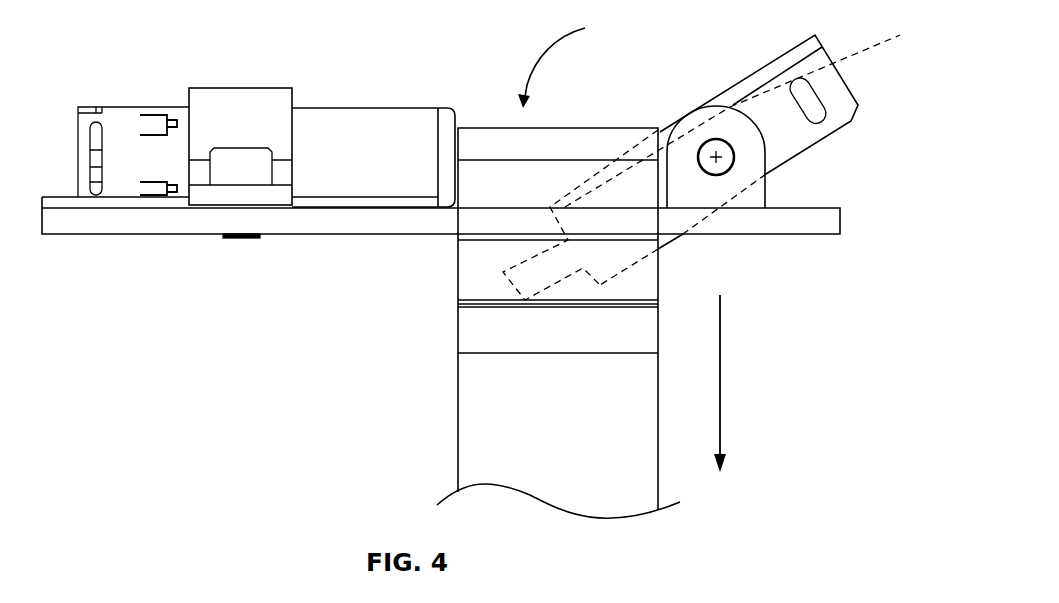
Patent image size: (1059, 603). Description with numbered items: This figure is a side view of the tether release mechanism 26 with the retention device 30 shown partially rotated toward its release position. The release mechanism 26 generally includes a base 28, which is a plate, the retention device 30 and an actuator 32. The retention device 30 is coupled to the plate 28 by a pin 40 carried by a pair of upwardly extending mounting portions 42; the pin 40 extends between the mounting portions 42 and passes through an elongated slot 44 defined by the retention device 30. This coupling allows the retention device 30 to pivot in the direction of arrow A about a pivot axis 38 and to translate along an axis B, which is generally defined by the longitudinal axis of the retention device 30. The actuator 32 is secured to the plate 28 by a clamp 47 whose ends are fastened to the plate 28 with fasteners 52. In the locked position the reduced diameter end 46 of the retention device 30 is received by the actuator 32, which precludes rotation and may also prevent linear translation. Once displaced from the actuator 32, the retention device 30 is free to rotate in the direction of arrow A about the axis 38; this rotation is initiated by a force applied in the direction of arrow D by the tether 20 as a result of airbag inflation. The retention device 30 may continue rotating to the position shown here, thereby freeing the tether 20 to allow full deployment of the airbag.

The tether 20 is at (455, 397).
The release mechanism 26 is at (173, 40).
The base 28 is at (80, 233).
The retention device 30 is at (795, 47).
The actuator 32 is at (352, 102).
The pivot axis 38 is at (736, 166).
The pin 40 is at (710, 140).
The mounting portions 42 is at (695, 197).
The elongated slot 44 is at (830, 122).
The reduced diameter end 46 is at (503, 272).
The clamp 47 is at (243, 86).
The fasteners 52 is at (240, 170).
The arrow A is at (540, 53).
The axis B is at (889, 42).
The arrow D is at (721, 382).